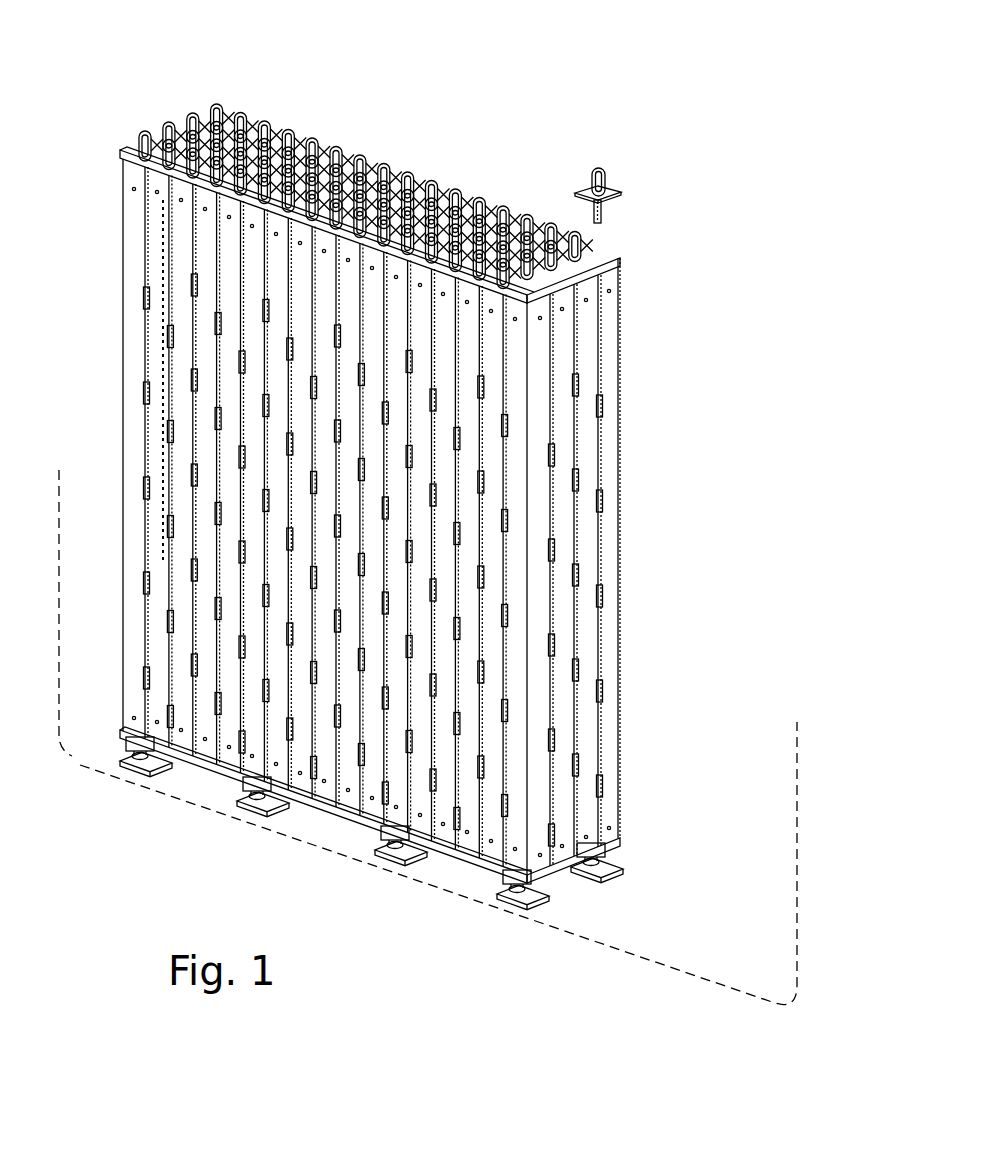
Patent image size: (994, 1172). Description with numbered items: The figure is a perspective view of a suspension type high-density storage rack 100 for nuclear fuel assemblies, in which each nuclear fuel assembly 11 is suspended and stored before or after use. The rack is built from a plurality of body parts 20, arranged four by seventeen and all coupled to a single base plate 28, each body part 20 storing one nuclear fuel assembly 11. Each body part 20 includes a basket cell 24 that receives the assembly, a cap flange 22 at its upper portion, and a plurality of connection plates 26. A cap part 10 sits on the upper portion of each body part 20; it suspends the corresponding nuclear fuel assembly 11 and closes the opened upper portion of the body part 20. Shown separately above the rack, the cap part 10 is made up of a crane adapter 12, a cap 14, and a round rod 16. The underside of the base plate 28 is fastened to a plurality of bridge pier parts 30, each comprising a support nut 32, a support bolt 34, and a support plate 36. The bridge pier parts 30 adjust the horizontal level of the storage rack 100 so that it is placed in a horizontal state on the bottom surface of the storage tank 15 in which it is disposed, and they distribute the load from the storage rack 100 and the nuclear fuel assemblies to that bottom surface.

The suspension type high-density storage rack 100 is at (420, 148).
The cap part 10 is at (718, 125).
The nuclear fuel assembly 11 is at (165, 353).
The crane adapter 12 is at (605, 170).
The cap 14 is at (618, 191).
The storage tank 15 is at (98, 737).
The round rod 16 is at (604, 210).
The body part 20 is at (733, 272).
The cap flange 22 is at (625, 258).
The basket cell 24 is at (612, 628).
The connection plate 26 is at (600, 470).
The base plate 28 is at (622, 847).
The bridge pier part 30 is at (722, 870).
The support nut 32 is at (612, 860).
The support bolt 34 is at (598, 866).
The support plate 36 is at (598, 876).